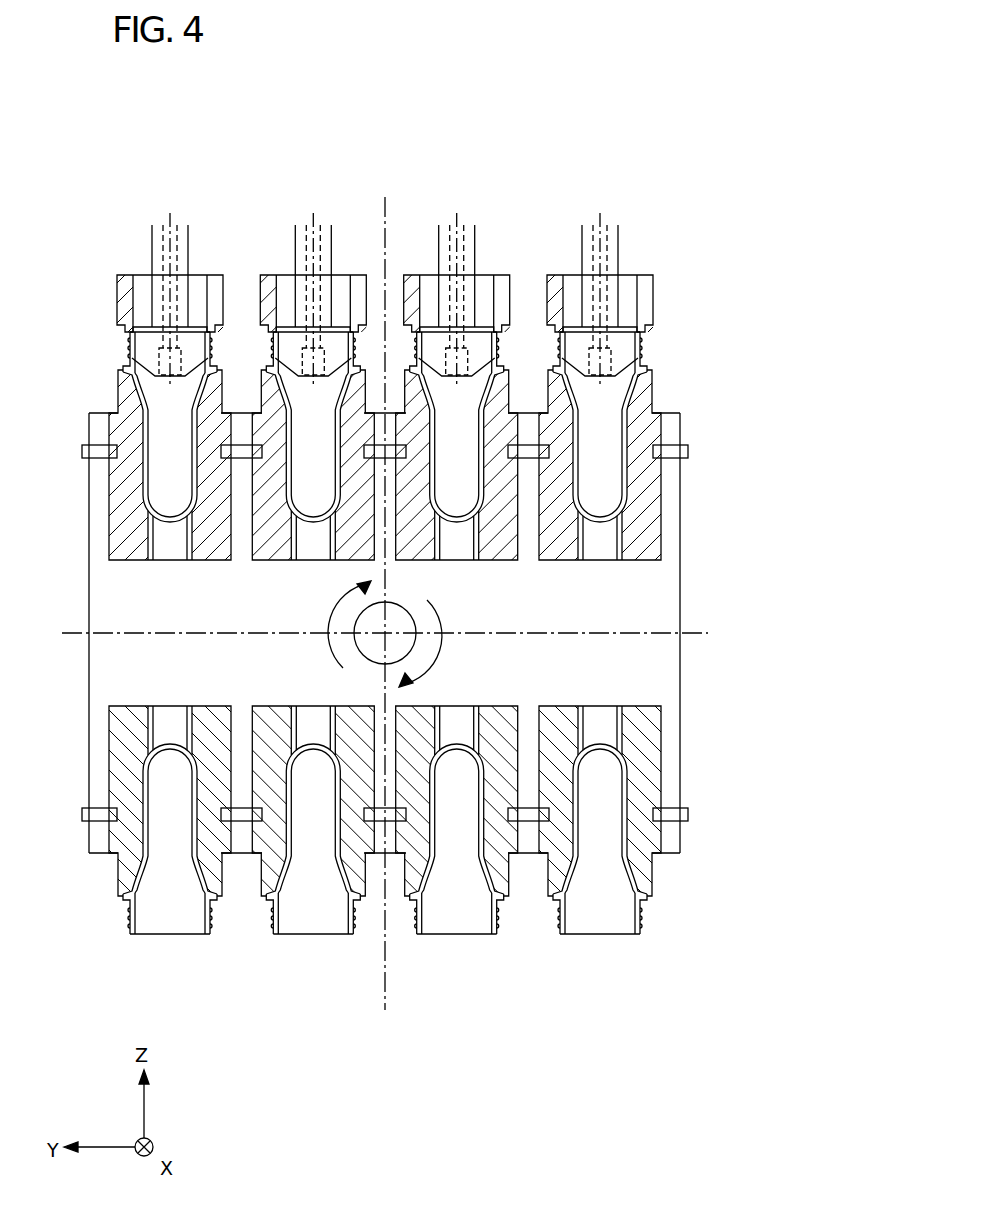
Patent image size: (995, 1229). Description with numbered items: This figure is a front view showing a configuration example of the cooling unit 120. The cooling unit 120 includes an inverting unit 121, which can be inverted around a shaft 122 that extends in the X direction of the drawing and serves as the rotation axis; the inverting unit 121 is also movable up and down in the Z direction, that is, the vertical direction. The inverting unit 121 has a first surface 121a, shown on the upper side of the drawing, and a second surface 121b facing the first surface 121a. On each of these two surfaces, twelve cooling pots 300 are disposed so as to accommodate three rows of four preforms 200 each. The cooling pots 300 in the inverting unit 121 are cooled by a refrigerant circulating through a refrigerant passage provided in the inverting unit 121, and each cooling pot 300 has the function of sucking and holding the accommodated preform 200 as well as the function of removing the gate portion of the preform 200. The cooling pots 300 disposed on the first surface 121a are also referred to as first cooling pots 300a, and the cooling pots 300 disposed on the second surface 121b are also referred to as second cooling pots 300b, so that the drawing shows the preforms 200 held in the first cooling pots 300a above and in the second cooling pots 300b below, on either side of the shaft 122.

The cooling unit 120 is at (699, 208).
The inverting unit 121 is at (681, 582).
The first surface 121a is at (673, 413).
The second surface 121b is at (673, 855).
The shaft 122 is at (413, 648).
The preform 200 is at (130, 357).
The cooling pot 300 is at (385, 585).
The first cooling pot 300a is at (224, 376).
The second cooling pot 300b is at (222, 895).